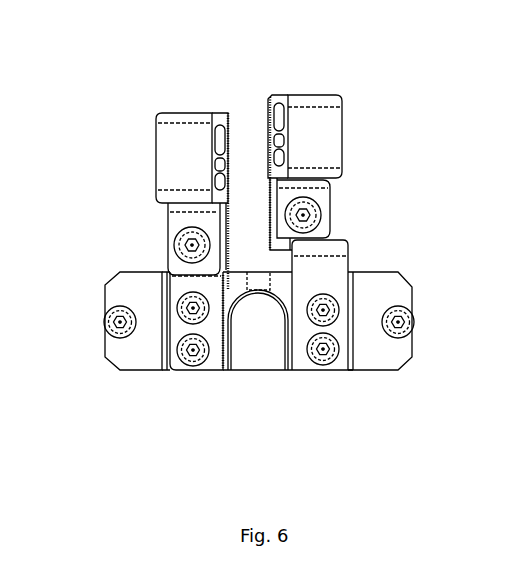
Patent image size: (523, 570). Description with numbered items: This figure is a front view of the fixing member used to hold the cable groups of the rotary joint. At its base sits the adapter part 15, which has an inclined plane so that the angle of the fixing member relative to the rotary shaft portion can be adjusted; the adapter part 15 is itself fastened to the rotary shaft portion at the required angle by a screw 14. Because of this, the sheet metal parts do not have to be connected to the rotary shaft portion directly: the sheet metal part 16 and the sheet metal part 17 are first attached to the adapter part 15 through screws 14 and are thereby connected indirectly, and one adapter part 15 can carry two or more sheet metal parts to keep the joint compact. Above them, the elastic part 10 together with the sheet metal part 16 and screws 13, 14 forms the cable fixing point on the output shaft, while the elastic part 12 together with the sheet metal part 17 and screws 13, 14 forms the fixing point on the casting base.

The elastic part 10 is at (280, 123).
The elastic part 12 is at (217, 142).
The screw 13 is at (197, 236).
The screw 14 is at (118, 322).
The adapter part 15 is at (137, 358).
The sheet metal part 16 is at (323, 133).
The sheet metal part 17 is at (179, 158).